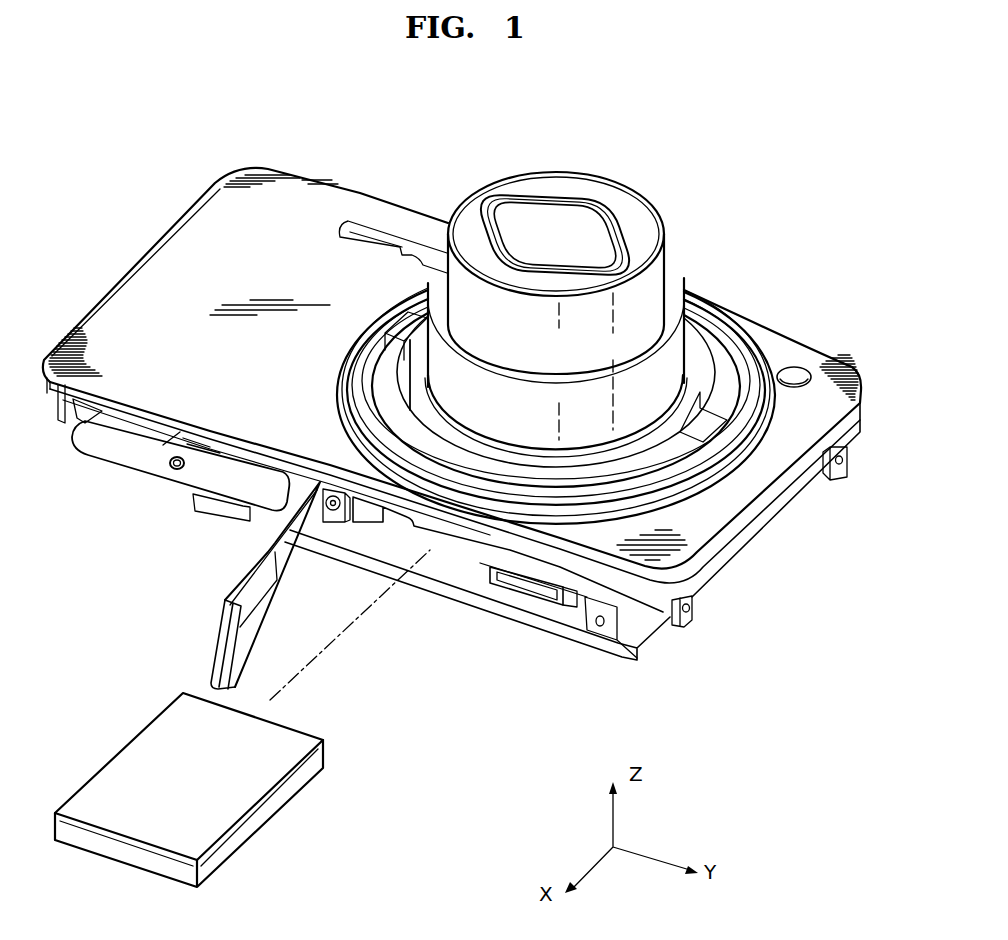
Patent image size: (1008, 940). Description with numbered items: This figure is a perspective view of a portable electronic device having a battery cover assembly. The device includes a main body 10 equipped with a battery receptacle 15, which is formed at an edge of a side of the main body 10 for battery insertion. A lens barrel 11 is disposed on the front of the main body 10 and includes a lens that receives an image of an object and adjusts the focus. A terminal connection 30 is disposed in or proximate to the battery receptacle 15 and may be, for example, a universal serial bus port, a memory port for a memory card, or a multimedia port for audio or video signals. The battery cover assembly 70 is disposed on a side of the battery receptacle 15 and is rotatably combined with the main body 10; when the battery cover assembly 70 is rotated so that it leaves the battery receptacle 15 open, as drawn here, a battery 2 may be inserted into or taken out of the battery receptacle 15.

The main body 10 is at (360, 190).
The lens barrel 11 is at (672, 257).
The battery receptacle 15 is at (392, 543).
The terminal connection 30 is at (537, 586).
The battery cover assembly 70 is at (287, 614).
The battery 2 is at (280, 800).